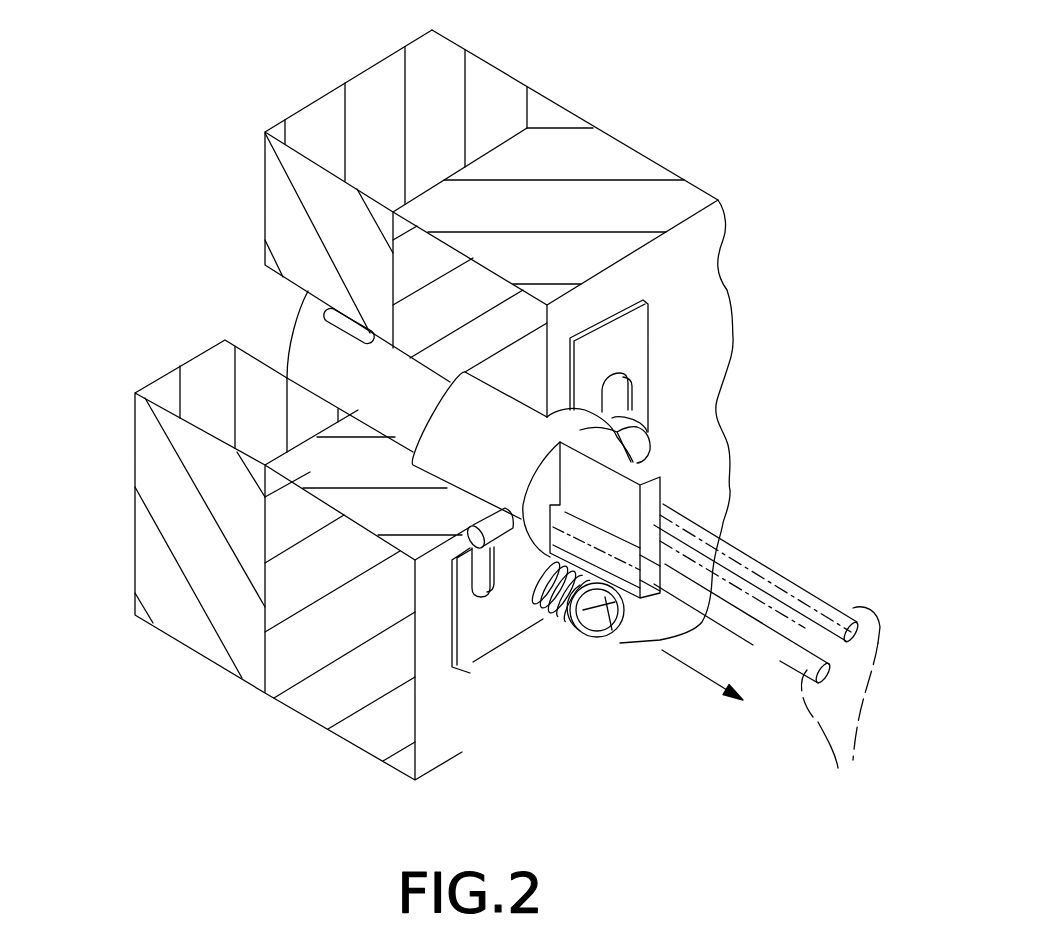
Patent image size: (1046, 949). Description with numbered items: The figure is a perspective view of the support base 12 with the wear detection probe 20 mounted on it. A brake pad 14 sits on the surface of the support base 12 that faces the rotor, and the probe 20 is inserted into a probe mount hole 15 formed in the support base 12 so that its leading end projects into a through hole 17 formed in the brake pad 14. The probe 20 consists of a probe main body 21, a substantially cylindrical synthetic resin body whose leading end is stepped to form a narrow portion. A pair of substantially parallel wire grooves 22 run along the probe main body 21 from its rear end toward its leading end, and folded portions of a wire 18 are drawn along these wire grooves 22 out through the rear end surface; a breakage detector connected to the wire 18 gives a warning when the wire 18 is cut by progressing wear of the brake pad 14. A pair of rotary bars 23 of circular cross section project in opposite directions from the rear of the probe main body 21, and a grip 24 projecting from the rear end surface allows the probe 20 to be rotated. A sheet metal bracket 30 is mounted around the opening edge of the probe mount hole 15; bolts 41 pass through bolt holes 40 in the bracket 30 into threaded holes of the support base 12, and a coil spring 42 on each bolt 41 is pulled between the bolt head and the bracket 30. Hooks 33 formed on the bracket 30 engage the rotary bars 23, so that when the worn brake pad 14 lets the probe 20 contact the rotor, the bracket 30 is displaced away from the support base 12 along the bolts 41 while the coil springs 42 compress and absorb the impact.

The support base 12 is at (570, 153).
The brake pad 14 is at (435, 93).
The probe mount hole 15 is at (467, 370).
The through hole 17 is at (287, 380).
The wire 18 is at (767, 657).
The wear detection probe 20 is at (682, 483).
The probe main body 21 is at (468, 472).
The wire grooves 22 is at (613, 600).
The rotary bars 23 is at (648, 433).
The grip 24 is at (647, 502).
The bracket 30 is at (668, 305).
The hooks 33 is at (638, 417).
The bolt holes 40 is at (605, 677).
The bolts 41 is at (608, 620).
The coil spring 42 is at (543, 610).